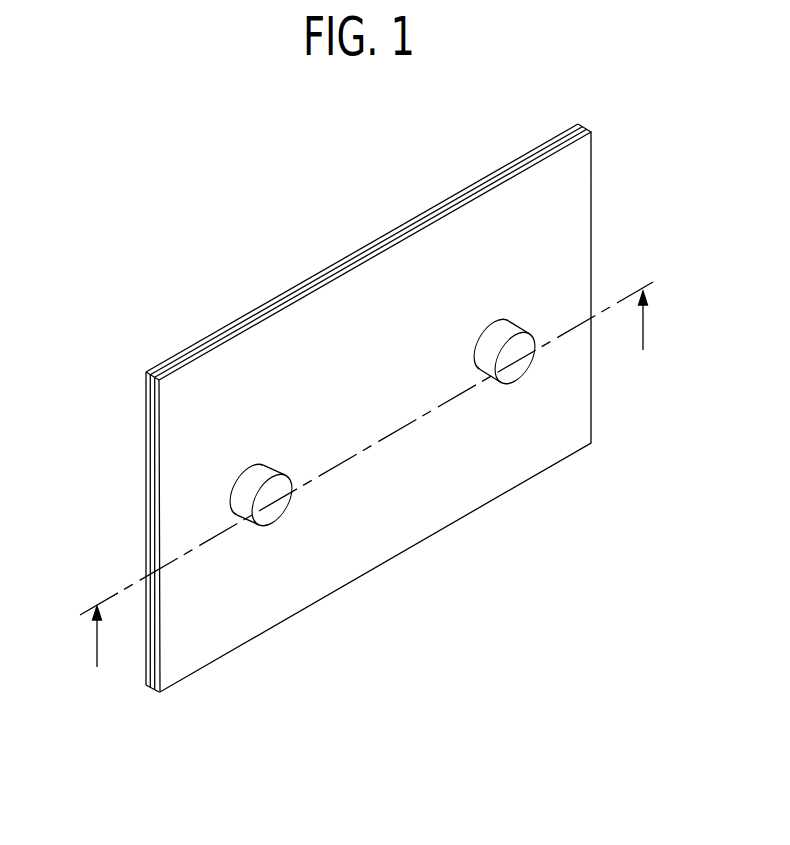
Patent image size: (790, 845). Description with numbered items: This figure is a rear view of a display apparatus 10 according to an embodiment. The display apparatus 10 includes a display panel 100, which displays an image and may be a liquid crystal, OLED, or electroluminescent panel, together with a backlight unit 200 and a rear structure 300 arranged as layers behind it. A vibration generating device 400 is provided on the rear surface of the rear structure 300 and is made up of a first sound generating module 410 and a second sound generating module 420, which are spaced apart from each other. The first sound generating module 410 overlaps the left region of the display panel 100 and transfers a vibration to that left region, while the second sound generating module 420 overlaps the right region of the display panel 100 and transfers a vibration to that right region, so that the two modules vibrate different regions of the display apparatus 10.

The display apparatus 10 is at (142, 318).
The display panel 100 is at (192, 346).
The backlight unit 200 is at (150, 408).
The rear structure 300 is at (192, 450).
The vibration generating device 400 is at (426, 143).
The first sound generating module 410 is at (250, 478).
The second sound generating module 420 is at (490, 342).